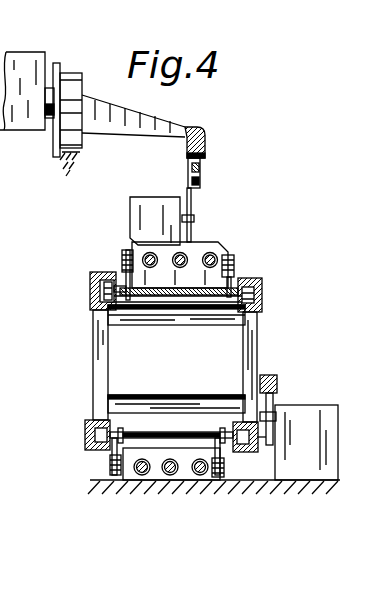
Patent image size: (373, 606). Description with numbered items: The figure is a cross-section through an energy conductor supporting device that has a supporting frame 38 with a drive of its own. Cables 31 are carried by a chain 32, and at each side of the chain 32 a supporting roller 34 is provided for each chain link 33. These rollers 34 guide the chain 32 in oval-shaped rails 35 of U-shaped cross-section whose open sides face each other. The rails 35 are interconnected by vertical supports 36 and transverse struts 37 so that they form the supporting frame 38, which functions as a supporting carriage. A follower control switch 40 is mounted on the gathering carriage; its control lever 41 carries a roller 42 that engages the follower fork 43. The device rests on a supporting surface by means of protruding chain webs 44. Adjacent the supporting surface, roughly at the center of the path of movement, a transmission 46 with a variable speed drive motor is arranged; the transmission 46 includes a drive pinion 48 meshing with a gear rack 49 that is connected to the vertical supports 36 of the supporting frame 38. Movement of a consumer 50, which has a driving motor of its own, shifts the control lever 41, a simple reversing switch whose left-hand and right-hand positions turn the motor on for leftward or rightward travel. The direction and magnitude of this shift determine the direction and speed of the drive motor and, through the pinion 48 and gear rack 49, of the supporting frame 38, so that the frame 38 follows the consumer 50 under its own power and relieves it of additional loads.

The cables 31 is at (172, 476).
The chain 32 is at (240, 276).
The chain link 33 is at (122, 257).
The supporting roller 34 is at (93, 273).
The oval-shaped rails 35 is at (100, 284).
The vertical supports 36 is at (260, 325).
The transverse struts 37 is at (184, 328).
The supporting frame 38 is at (90, 358).
The follower control switch 40 is at (170, 236).
The control lever 41 is at (192, 207).
The roller 42 is at (202, 170).
The follower fork 43 is at (202, 130).
The chain webs 44 is at (184, 483).
The transmission 46 is at (325, 433).
The drive pinion 48 is at (273, 402).
The gear rack 49 is at (276, 376).
The consumer 50 is at (31, 122).